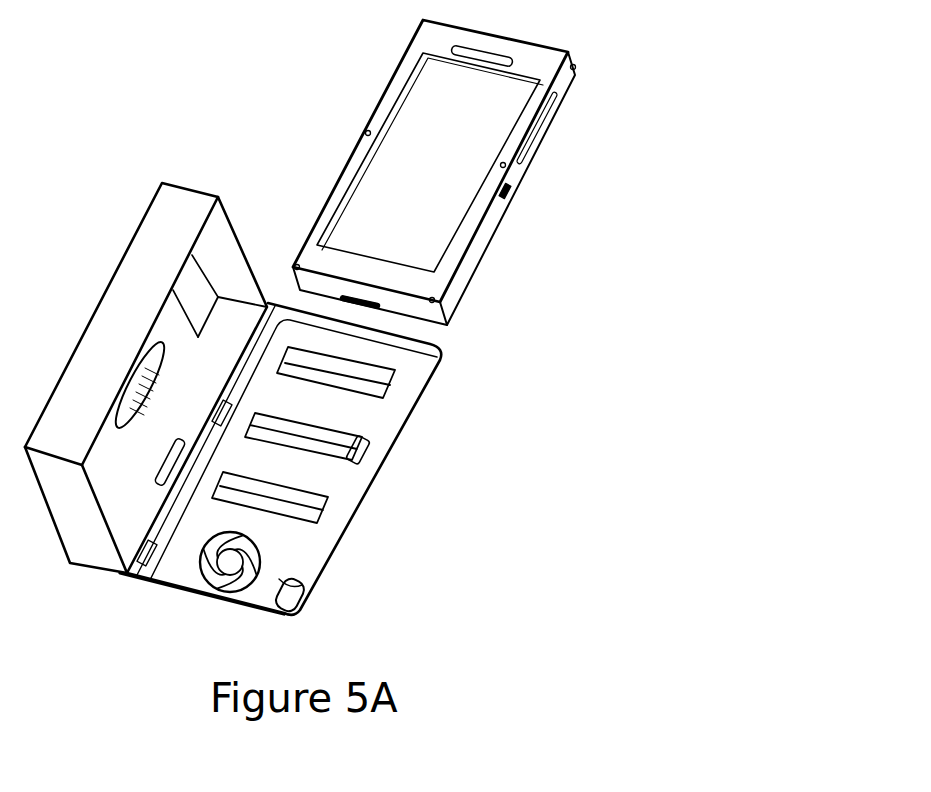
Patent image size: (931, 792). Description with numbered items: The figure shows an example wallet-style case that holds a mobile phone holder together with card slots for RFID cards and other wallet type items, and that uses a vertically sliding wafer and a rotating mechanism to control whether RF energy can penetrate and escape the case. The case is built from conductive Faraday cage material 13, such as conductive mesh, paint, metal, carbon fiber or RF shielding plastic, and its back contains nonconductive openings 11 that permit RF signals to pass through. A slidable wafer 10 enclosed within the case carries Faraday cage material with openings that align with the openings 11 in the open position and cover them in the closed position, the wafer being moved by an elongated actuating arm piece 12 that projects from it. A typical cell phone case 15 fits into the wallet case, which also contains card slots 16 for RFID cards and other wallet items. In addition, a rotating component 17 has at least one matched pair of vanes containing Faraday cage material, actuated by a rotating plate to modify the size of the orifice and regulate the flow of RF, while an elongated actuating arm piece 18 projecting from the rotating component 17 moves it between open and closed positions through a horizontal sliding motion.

The slidable wafer 10 is at (265, 508).
The openings 11 is at (352, 366).
The elongated actuating arm piece 12 is at (414, 418).
The conductive Faraday cage material 13 is at (188, 211).
The cell phone case 15 is at (418, 37).
The card slots 16 is at (210, 268).
The rotating component 17 is at (264, 558).
The elongated actuating arm piece 18 is at (202, 600).